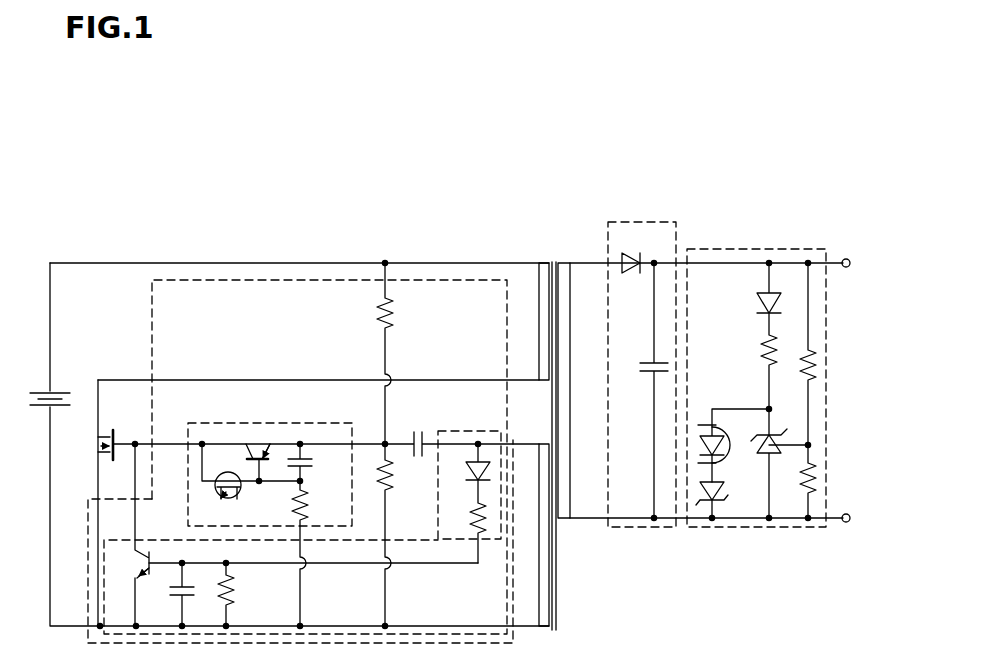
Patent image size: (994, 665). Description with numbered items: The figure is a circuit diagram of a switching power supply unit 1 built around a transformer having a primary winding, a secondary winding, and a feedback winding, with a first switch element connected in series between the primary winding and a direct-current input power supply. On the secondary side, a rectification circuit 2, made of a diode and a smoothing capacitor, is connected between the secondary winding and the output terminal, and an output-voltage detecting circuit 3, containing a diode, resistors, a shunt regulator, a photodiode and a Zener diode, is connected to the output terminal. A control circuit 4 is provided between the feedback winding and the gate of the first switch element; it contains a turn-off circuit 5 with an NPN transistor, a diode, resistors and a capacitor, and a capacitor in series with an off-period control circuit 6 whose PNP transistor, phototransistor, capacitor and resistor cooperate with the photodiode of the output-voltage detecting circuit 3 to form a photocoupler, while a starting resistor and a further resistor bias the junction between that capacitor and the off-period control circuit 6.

The switching power supply unit 1 is at (290, 208).
The rectification circuit 2 is at (647, 220).
The output-voltage detecting circuit 3 is at (737, 248).
The control circuit 4 is at (215, 278).
The turn-off circuit 5 is at (458, 429).
The off-period control circuit 6 is at (218, 421).